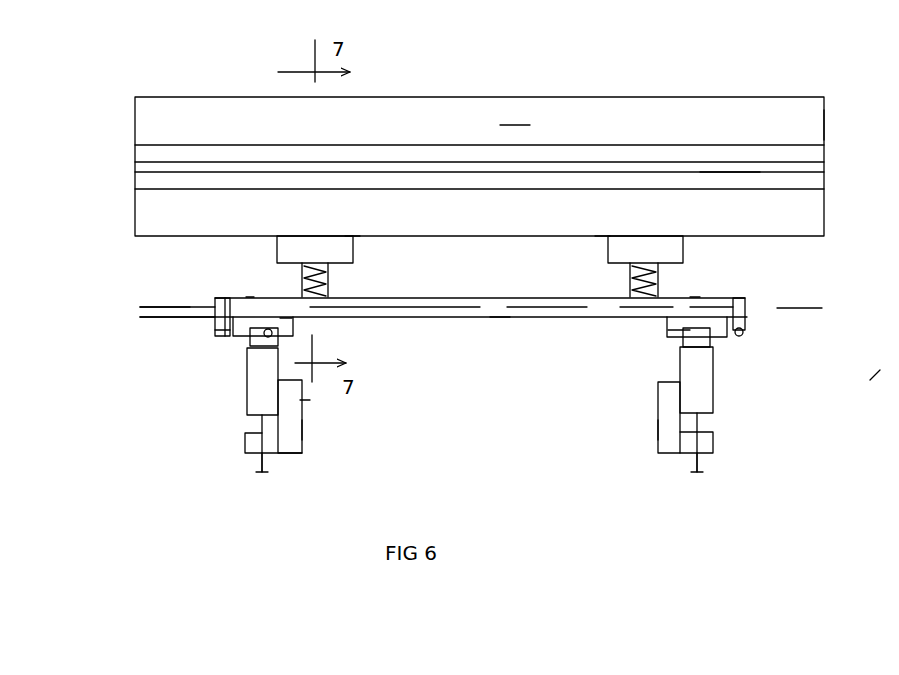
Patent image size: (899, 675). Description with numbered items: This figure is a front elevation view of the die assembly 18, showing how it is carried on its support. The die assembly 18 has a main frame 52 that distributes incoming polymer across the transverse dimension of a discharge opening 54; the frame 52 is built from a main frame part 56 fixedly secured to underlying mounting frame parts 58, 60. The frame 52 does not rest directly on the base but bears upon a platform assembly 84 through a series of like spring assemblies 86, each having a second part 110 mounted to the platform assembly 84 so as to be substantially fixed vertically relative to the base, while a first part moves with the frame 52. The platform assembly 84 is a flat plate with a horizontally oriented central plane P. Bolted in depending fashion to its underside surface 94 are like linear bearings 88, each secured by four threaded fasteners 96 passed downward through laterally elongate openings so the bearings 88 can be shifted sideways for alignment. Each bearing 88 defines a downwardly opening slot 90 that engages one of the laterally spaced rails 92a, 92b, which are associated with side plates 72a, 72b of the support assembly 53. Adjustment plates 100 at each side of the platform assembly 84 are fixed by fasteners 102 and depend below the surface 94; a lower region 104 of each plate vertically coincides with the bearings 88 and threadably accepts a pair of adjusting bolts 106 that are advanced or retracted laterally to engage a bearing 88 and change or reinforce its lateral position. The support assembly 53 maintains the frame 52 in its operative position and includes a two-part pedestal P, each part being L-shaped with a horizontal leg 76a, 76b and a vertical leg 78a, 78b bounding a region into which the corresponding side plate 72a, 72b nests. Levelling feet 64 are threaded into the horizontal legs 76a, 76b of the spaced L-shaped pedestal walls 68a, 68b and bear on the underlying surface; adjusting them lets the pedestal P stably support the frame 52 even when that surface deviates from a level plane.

The die assembly 18 is at (668, 96).
The main frame 52 is at (828, 123).
The discharge opening 54 is at (722, 172).
The main frame part 56 is at (513, 123).
The mounting frame part 58 is at (603, 250).
The mounting frame part 60 is at (353, 247).
The threaded fastener 96 is at (282, 295).
The spring assembly 86 is at (338, 273).
The linear bearing 88 is at (250, 297).
The slot 90 is at (282, 318).
The platform assembly 84 is at (542, 320).
The underside surface 94 is at (500, 319).
The support assembly 53 is at (355, 405).
The adjustment plate 100 is at (215, 315).
The fastener 102 is at (214, 302).
The lower region 104 is at (218, 330).
The adjusting bolt 106 is at (213, 318).
The rail 92a is at (250, 345).
The rail 92b is at (702, 337).
The side plate 72a is at (247, 383).
The side plate 72b is at (713, 382).
The vertical leg 78a is at (304, 415).
The vertical leg 78b is at (657, 403).
The horizontal leg 76a is at (277, 455).
The horizontal leg 76b is at (705, 442).
The L-shaped pedestal wall 68a is at (300, 458).
The L-shaped pedestal wall 68b is at (663, 455).
The levelling foot 64 is at (256, 464).
The pedestal P is at (304, 429).
The second part 110 is at (882, 362).